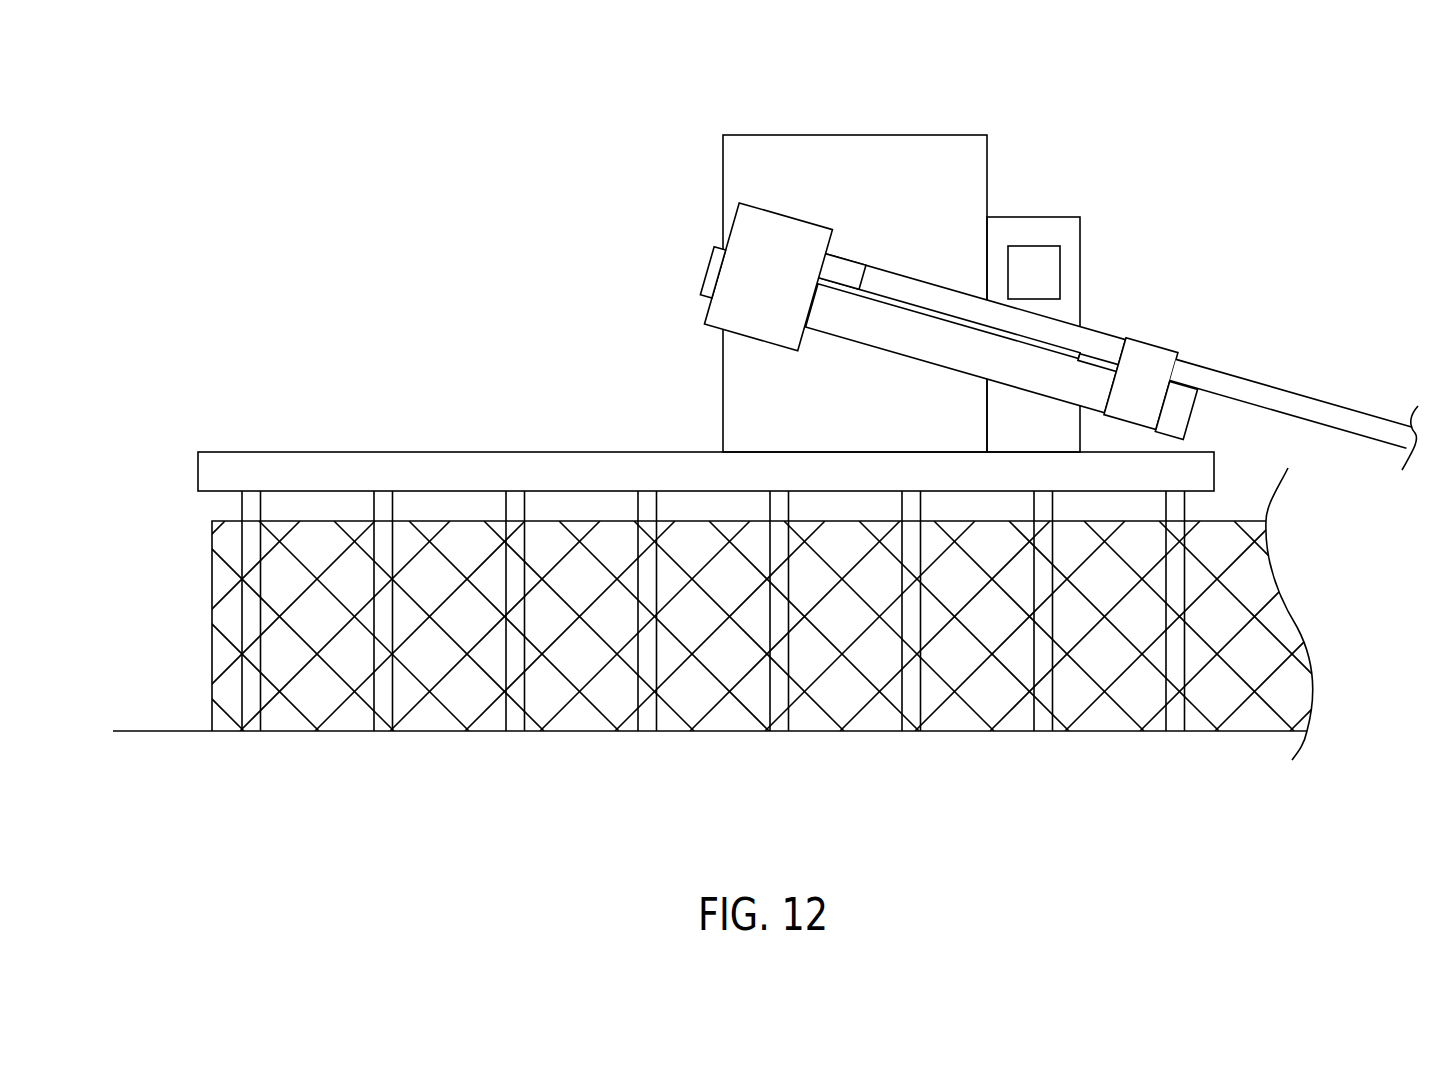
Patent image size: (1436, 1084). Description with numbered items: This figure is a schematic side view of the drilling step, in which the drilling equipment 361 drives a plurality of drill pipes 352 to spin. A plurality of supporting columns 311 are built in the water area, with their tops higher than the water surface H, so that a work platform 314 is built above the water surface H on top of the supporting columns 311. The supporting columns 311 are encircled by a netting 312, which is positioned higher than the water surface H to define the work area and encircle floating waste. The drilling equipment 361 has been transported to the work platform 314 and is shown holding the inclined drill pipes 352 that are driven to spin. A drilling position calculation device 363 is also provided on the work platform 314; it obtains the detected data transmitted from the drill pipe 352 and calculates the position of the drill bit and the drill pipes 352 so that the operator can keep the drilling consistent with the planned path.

The supporting column 311 is at (240, 510).
The netting 312 is at (1222, 521).
The work platform 314 is at (357, 460).
The drill pipe 352 is at (1100, 346).
The drilling equipment 361 is at (798, 227).
The drilling position calculation device 363 is at (1052, 277).
The water surface H is at (180, 728).